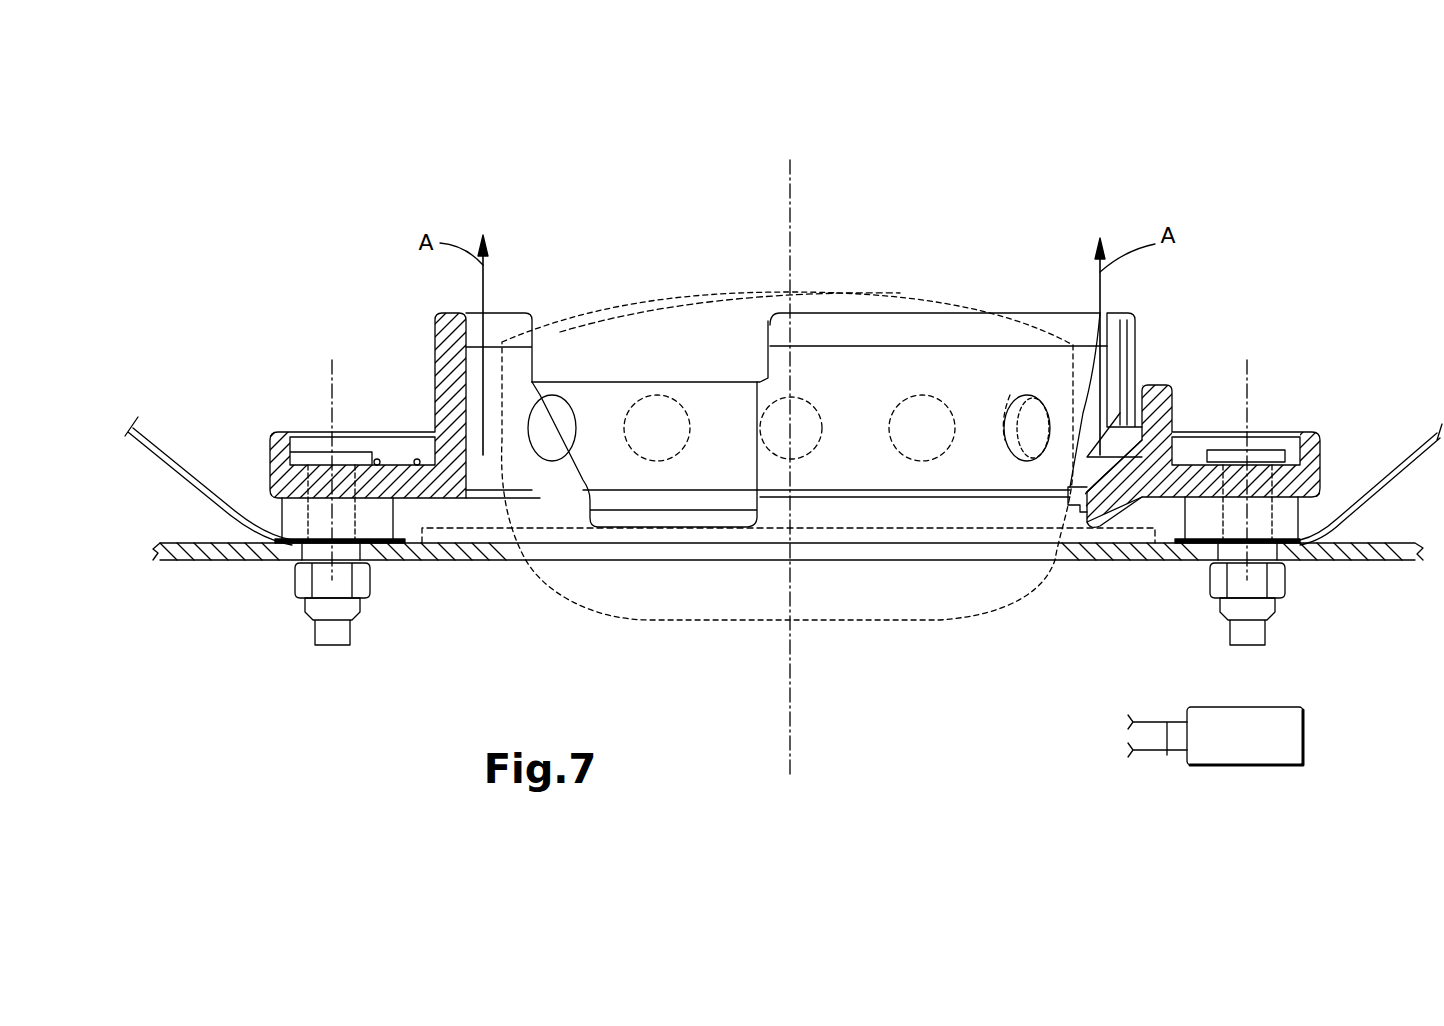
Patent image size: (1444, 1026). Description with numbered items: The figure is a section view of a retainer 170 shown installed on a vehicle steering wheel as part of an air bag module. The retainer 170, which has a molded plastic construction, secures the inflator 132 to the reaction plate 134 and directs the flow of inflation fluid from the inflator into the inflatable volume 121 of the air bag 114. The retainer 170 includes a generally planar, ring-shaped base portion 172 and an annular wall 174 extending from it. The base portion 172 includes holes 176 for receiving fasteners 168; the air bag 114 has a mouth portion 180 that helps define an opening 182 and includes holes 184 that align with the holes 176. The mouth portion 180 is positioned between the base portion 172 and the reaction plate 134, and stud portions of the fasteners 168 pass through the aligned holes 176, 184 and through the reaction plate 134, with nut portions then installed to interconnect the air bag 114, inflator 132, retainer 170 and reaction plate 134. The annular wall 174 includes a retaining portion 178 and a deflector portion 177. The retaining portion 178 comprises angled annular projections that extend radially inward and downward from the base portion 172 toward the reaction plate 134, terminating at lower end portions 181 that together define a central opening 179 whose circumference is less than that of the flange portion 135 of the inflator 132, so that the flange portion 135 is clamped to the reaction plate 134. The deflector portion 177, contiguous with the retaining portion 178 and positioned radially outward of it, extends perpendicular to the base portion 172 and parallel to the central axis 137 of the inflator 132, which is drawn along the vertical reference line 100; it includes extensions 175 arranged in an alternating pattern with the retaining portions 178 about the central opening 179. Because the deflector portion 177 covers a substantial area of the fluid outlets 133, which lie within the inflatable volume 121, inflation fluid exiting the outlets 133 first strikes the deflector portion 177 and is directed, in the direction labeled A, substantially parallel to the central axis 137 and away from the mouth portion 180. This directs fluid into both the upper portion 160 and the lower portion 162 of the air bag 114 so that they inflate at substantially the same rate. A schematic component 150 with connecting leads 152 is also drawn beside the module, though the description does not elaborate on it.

The inflatable volume 121 is at (680, 136).
The central axis 100 is at (790, 200).
The central axis 137 is at (790, 240).
The inflator 132 is at (875, 297).
The fluid outlets 133 is at (1023, 423).
The extensions 175 is at (1043, 313).
The central opening 179 is at (508, 332).
The mouth portion 180 is at (392, 460).
The base portion 172 is at (385, 445).
The annular wall 174 is at (1200, 364).
The deflector portion 177 is at (1160, 383).
The retaining portion 178 is at (572, 527).
The lower end portions 181 is at (1068, 505).
The retainer 170 is at (1320, 356).
The upper portion 160 is at (158, 453).
The lower portion 162 is at (1420, 448).
The air bag 114 is at (168, 480).
The reaction plate 134 is at (196, 565).
The flange portion 135 is at (453, 533).
The opening 182 is at (414, 543).
The holes 184 is at (298, 563).
The holes 176 is at (375, 548).
The fasteners 168 is at (330, 637).
The electronics module 150 is at (1271, 740).
The wires 152 is at (1152, 750).